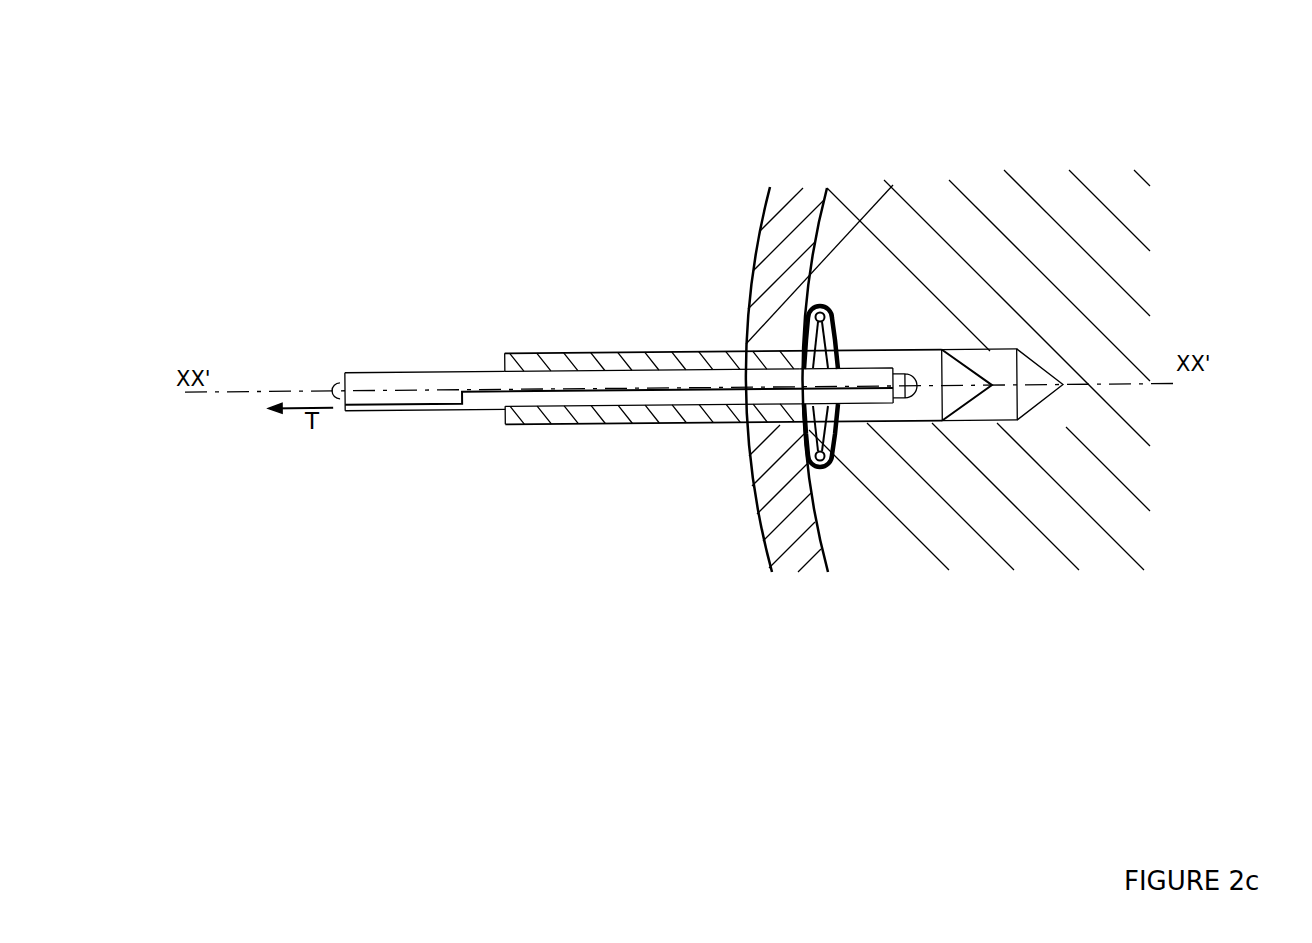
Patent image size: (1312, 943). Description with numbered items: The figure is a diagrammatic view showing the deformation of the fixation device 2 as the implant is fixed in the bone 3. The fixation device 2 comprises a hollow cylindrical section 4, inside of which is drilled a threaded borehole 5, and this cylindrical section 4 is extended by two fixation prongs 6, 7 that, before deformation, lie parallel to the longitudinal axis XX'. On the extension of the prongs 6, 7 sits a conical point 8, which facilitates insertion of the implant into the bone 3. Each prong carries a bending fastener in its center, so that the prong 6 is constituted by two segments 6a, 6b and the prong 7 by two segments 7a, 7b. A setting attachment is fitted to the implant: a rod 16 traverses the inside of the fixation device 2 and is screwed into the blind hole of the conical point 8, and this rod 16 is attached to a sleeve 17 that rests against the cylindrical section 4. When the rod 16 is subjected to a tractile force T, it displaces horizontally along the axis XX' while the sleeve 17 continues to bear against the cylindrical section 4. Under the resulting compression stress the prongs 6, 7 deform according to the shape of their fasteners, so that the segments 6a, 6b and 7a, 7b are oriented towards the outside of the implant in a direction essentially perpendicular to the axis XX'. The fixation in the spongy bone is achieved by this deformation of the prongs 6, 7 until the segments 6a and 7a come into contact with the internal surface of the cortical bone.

The fixation device 2 is at (574, 303).
The bone 3 is at (354, 540).
The hollow cylindrical section 4 is at (803, 408).
The threaded borehole 5 is at (748, 348).
The fixation prong 6 is at (823, 303).
The prong segment 6a is at (808, 330).
The prong segment 6b is at (833, 337).
The fixation prong 7 is at (834, 470).
The prong segment 7a is at (806, 412).
The prong segment 7b is at (840, 422).
The conical point 8 is at (958, 373).
The rod 16 is at (372, 382).
The sleeve 17 is at (607, 420).